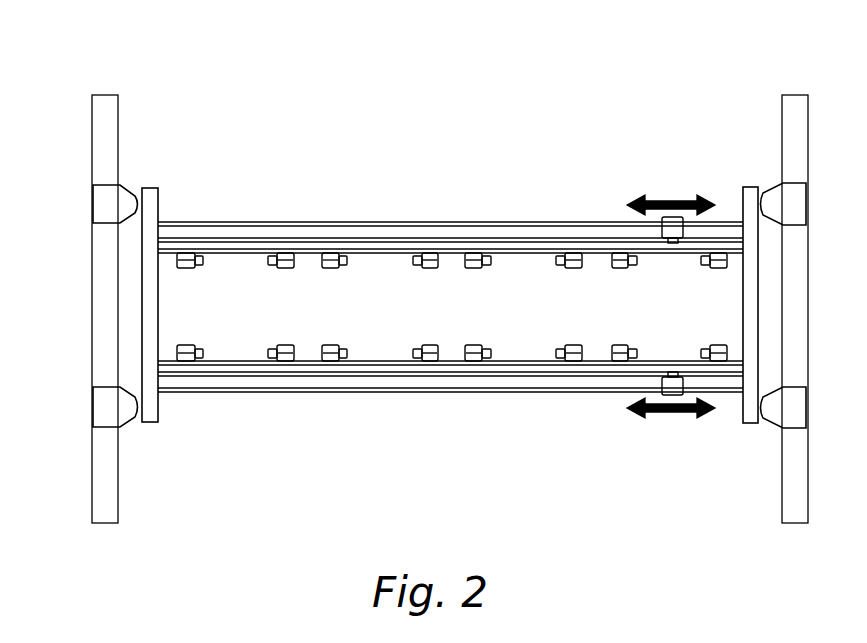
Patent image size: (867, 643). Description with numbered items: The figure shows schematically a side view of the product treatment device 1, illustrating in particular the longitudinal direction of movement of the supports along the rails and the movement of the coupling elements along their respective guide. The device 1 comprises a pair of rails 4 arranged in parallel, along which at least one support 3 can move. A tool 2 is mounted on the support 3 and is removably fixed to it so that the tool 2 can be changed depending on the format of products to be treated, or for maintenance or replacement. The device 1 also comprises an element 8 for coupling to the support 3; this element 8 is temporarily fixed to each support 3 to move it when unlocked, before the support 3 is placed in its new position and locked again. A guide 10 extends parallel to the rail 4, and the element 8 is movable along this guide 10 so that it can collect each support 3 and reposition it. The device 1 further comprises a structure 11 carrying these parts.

The product treatment device 1 is at (84, 142).
The structure 11 is at (101, 148).
The guide 10 is at (607, 230).
The rail 4 is at (374, 365).
The support 3 is at (330, 253).
The tool 2 is at (343, 258).
The element for coupling 8 is at (672, 220).